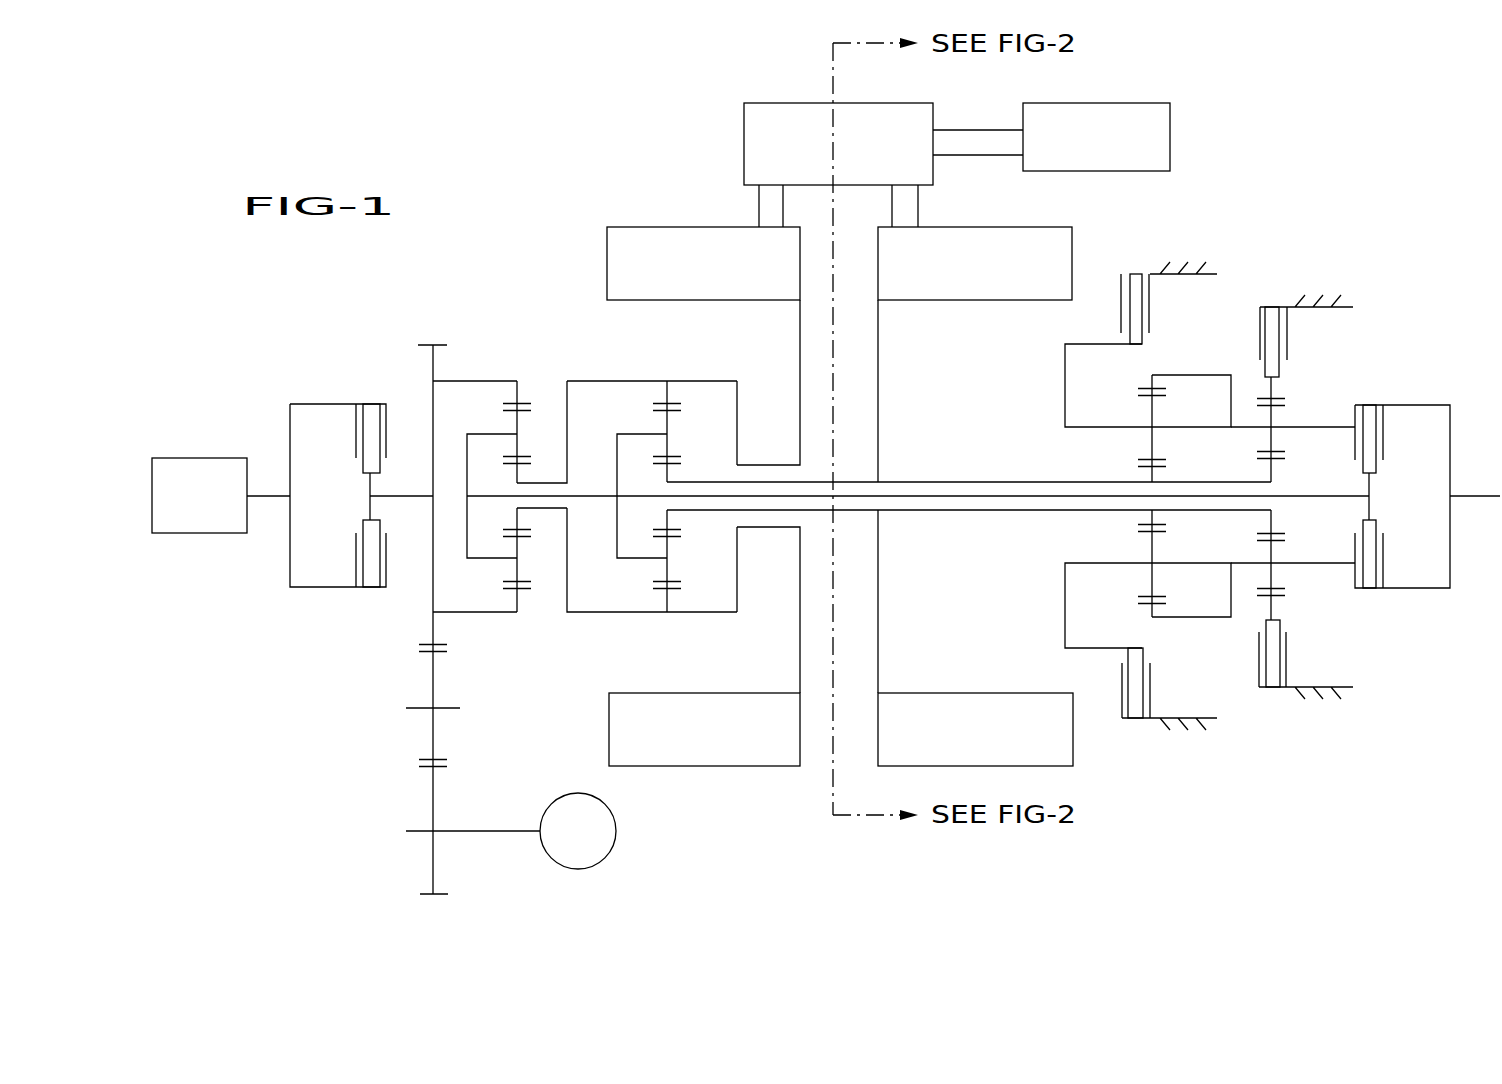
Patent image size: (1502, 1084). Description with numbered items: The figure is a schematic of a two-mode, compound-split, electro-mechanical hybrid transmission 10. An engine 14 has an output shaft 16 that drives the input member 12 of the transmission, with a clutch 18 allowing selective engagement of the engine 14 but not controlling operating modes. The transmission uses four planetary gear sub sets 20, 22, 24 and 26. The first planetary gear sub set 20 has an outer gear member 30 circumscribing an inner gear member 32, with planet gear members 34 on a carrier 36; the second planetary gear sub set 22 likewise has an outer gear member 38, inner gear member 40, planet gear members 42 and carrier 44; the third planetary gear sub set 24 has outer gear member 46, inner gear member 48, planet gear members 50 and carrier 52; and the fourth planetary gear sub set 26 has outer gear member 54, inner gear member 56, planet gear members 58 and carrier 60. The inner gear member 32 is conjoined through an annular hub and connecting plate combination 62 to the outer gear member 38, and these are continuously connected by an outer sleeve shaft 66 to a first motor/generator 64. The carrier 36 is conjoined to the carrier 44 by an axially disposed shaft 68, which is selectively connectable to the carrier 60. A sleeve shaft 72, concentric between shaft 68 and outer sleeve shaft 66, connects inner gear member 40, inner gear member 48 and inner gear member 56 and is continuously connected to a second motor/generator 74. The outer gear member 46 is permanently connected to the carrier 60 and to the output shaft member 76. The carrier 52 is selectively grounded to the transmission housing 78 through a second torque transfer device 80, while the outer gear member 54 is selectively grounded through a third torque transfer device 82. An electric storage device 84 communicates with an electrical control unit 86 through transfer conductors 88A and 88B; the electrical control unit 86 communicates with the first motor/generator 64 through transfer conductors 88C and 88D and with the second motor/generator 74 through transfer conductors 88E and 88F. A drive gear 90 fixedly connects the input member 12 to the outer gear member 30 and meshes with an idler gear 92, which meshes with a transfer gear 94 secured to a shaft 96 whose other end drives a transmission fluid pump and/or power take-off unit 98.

The hybrid transmission 10 is at (515, 178).
The input member 12 is at (410, 495).
The engine 14 is at (203, 509).
The output shaft 16 is at (275, 493).
The clutch 18 is at (348, 600).
The first planetary gear sub set 20 is at (487, 372).
The second planetary gear sub set 22 is at (695, 410).
The third planetary gear sub set 24 is at (1226, 360).
The fourth planetary gear sub set 26 is at (1315, 355).
The outer gear member 30 is at (520, 404).
The inner gear member 32 is at (525, 465).
The planet gear members 34 is at (513, 423).
The carrier 36 is at (467, 535).
The outer gear member 38 is at (665, 404).
The inner gear member 40 is at (660, 532).
The planet gear members 42 is at (671, 450).
The carrier 44 is at (617, 545).
The outer gear member 46 is at (1140, 388).
The inner gear member 48 is at (1157, 478).
The planet gear members 50 is at (1150, 458).
The carrier 52 is at (1065, 400).
The outer gear member 54 is at (1278, 398).
The inner gear member 56 is at (1282, 463).
The planet gear members 58 is at (1278, 422).
The carrier 60 is at (1231, 395).
The annular hub and radially extending connecting plate combination 62 is at (570, 420).
The first motor/generator 64 is at (673, 276).
The outer sleeve shaft 66 is at (772, 465).
The axially disposed shaft 68 is at (848, 495).
The sleeve shaft 72 is at (928, 482).
The second motor/generator 74 is at (953, 276).
The output shaft member 76 is at (1462, 494).
The transmission housing 78 is at (1165, 270).
The second torque transfer device 80 is at (1130, 300).
The third torque transfer device 82 is at (1268, 330).
The electric storage device 84 is at (1080, 146).
The electrical control unit 86 is at (778, 156).
The transfer conductor 88A is at (972, 130).
The transfer conductor 88B is at (995, 155).
The transfer conductor 88C is at (759, 212).
The transfer conductor 88D is at (785, 212).
The transfer conductor 88E is at (890, 210).
The transfer conductor 88F is at (918, 212).
The drive gear 90 is at (430, 568).
The idler gear 92 is at (433, 737).
The transfer gear 94 is at (433, 800).
The shaft 96 is at (493, 831).
The transmission fluid pump and/or power take-off unit 98 is at (585, 825).